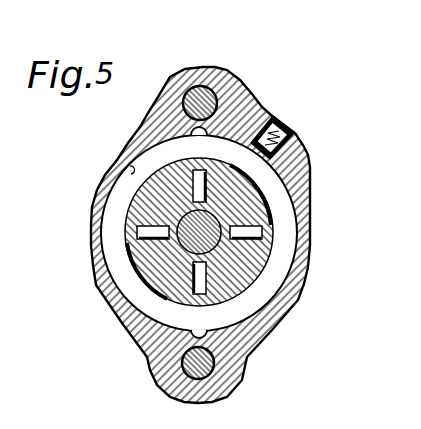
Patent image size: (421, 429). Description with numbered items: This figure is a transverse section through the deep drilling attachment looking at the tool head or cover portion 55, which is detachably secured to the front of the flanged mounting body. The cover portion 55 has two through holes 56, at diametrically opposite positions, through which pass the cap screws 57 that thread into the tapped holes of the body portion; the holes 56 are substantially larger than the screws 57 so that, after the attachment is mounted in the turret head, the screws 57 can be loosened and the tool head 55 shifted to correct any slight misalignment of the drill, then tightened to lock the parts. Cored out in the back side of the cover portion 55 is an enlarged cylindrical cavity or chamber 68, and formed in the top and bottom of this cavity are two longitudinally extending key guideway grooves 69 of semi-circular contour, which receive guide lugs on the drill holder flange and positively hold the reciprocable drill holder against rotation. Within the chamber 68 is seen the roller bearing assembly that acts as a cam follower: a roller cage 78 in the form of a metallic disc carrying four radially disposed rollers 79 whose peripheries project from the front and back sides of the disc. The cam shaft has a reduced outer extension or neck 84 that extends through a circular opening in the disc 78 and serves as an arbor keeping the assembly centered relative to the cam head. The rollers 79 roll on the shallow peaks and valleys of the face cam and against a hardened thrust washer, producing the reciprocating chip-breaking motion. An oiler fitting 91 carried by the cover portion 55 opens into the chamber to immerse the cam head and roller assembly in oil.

The tool head or cover cap portion 55 is at (152, 117).
The through holes 56 is at (192, 88).
The cap screws 57 is at (220, 84).
The cylindrical cavity or chamber 68 is at (130, 168).
The key guideway grooves 69 is at (188, 140).
The roller cage 78 is at (150, 200).
The rollers 79 is at (137, 232).
The reduced outer extension or neck 84 is at (207, 223).
The oiler fitting 91 is at (289, 128).